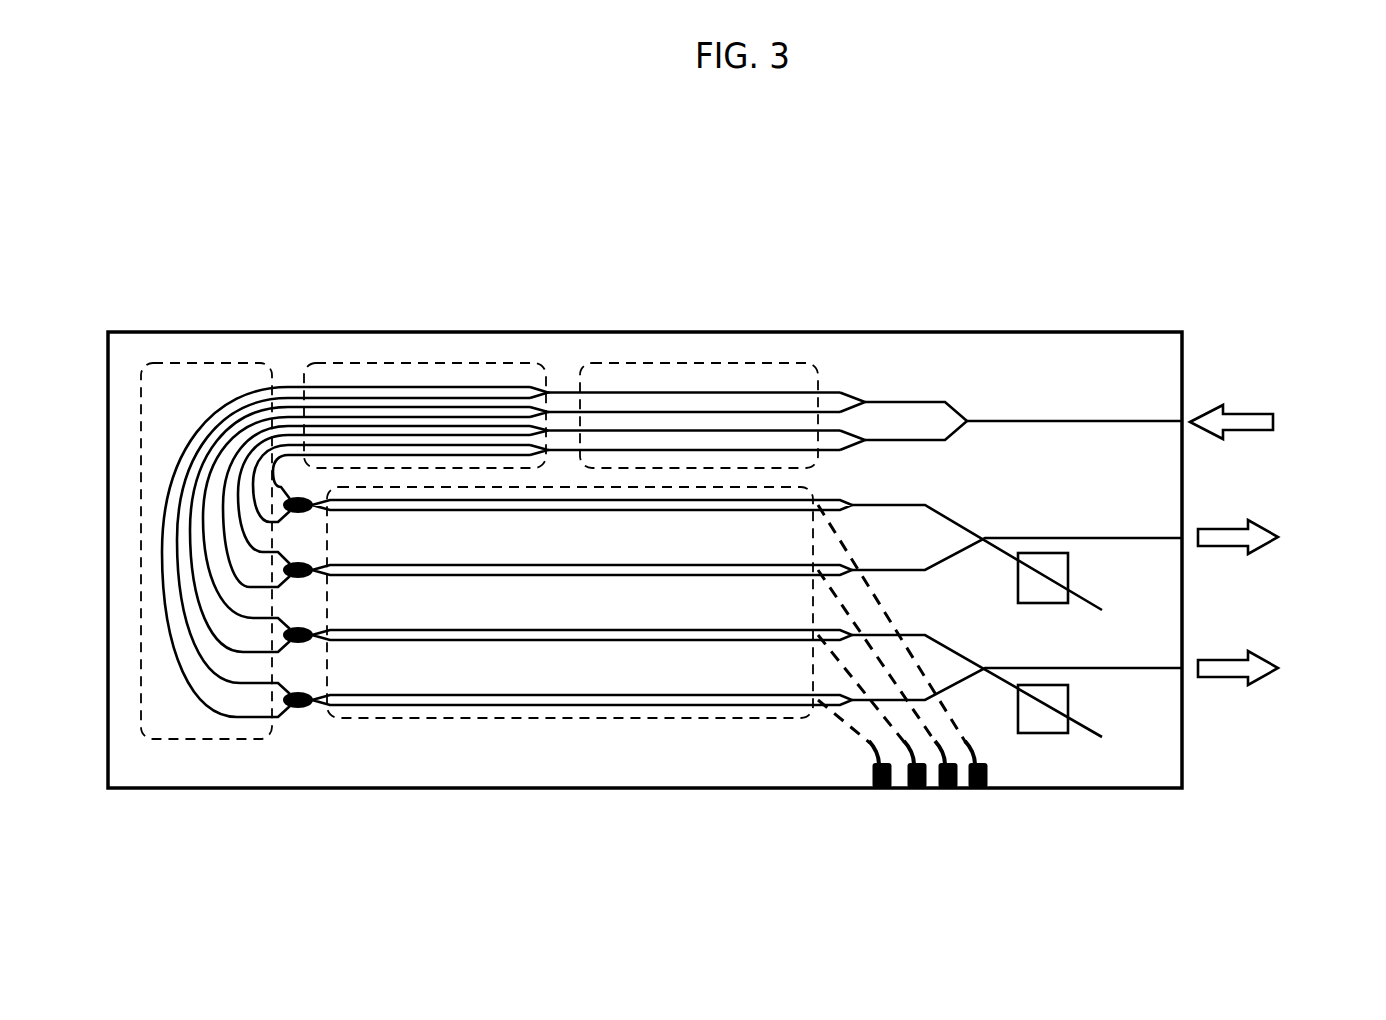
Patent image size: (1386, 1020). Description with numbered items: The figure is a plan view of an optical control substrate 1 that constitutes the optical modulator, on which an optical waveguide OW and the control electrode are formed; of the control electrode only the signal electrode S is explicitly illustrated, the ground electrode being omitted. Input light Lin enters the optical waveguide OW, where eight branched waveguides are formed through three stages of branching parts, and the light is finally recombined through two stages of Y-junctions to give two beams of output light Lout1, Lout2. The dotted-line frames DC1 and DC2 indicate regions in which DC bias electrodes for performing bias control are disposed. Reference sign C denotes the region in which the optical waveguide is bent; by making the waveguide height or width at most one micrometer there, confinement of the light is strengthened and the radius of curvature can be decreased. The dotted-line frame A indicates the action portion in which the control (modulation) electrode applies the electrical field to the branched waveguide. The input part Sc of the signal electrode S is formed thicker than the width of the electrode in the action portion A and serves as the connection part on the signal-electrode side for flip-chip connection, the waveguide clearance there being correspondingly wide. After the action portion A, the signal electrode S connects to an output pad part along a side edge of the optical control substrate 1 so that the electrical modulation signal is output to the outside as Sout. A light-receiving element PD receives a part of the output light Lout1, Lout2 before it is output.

The optical control substrate 1 is at (1112, 345).
The region in which the optical waveguide is bent C is at (240, 740).
The DC bias electrode region DC2 is at (430, 363).
The DC bias electrode region DC1 is at (770, 363).
The optical waveguide OW is at (884, 396).
The input part of the signal electrode Sc is at (313, 714).
The signal electrode S is at (617, 710).
The action portion A is at (752, 720).
The electrical signal output Sout is at (990, 792).
The light-receiving element PD is at (1045, 723).
The input light Lin is at (1263, 421).
The output light Lout1 is at (1279, 537).
The output light Lout2 is at (1280, 668).